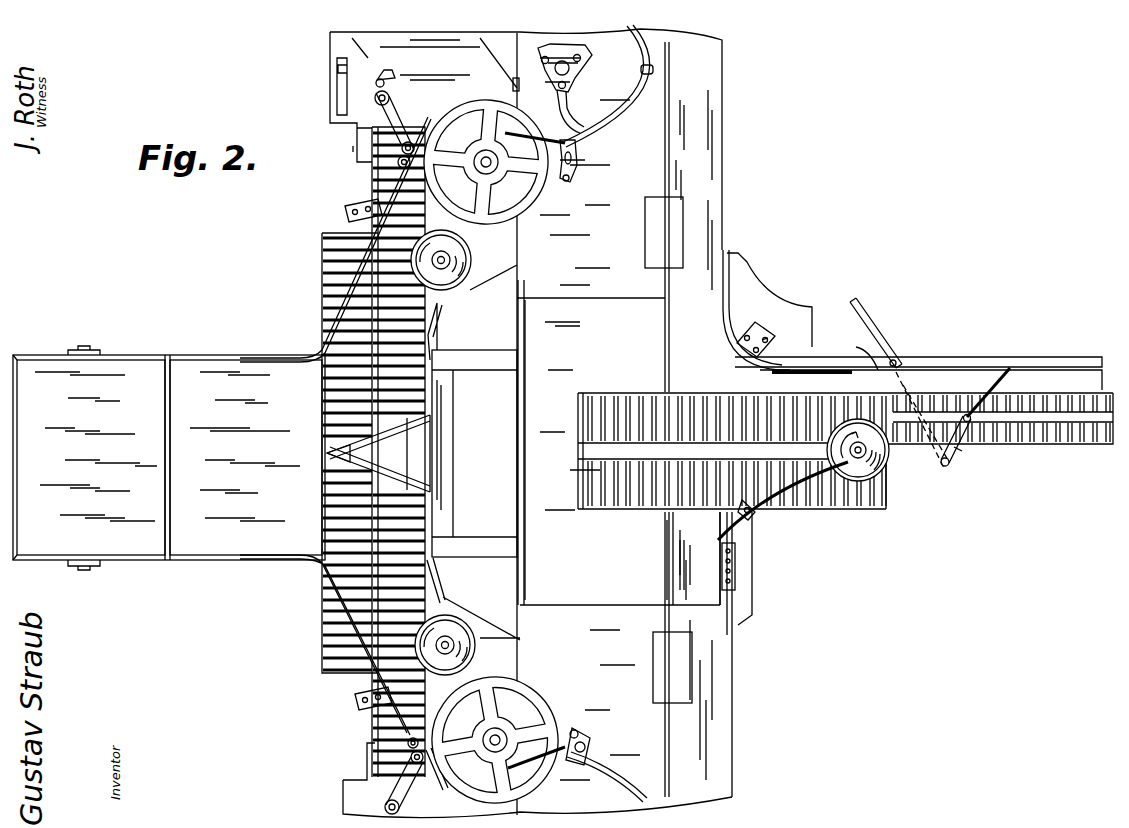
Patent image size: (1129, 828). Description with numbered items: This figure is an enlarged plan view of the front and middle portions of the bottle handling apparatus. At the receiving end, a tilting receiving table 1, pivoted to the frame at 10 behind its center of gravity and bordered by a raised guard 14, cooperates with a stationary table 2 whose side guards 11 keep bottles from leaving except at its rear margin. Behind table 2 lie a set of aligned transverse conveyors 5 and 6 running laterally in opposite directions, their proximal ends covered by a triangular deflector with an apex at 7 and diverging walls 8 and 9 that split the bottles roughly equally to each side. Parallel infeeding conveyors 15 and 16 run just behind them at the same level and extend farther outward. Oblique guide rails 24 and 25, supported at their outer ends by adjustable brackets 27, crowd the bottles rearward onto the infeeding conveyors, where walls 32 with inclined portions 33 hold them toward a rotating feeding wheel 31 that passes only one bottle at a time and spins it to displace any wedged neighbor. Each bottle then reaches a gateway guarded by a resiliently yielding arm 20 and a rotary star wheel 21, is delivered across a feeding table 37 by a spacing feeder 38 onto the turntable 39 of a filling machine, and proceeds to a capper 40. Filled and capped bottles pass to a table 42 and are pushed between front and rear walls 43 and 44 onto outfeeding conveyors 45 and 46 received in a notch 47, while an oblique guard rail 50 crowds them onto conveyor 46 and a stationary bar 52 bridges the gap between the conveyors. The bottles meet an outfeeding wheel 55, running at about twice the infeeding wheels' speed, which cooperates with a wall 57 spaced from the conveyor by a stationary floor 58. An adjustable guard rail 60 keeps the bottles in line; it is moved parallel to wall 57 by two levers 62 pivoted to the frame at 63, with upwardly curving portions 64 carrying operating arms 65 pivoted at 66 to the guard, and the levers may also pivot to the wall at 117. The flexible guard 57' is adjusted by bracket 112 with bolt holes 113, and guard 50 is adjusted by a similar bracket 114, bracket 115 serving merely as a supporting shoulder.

The tilting receiving table 1 is at (70, 486).
The stationary table 2 is at (225, 490).
The conveyor 5 is at (340, 612).
The conveyor 6 is at (340, 290).
The apex of the triangular deflector 7 is at (330, 456).
The deflector wall 8 is at (372, 470).
The deflector wall 9 is at (360, 440).
The pivot 10 is at (84, 352).
The side guard 11 is at (228, 560).
The raised guard 14 is at (55, 358).
The infeeding conveyor 15 is at (400, 622).
The infeeding conveyor 16 is at (372, 258).
The resiliently yielding arm 20 is at (392, 130).
The rotary star wheel 21 is at (530, 206).
The guide rail 24 is at (330, 588).
The guide rail 25 is at (335, 335).
The bracket 27 is at (352, 222).
The feeding wheel 31 is at (485, 660).
The wall 32 is at (432, 522).
The obliquely inclined portion 33 is at (440, 306).
The feeding table 37 is at (612, 126).
The spacing feeder 38 is at (570, 92).
The turntable 39 is at (620, 40).
The capper 40 is at (650, 240).
The table 42 is at (620, 588).
The front wall 43 is at (524, 505).
The rear wall 44 is at (665, 543).
The outfeeding conveyor 45 is at (630, 500).
The outfeeding conveyor 46 is at (640, 382).
The notch 47 is at (600, 514).
The guard rail 50 is at (798, 515).
The stationary bar 52 is at (696, 558).
The outfeeding wheel 55 is at (878, 472).
The guard rail or wall 57 is at (914, 312).
The flexible guard 57' is at (740, 310).
The stationary bar or floor 58 is at (931, 379).
The adjustable guard rail 60 is at (1035, 440).
The lever 62 is at (887, 350).
The pivot 63 is at (922, 422).
The upwardly curving portion 64 is at (950, 470).
The operating arm 65 is at (960, 450).
The pivot 66 is at (1007, 392).
The bracket 112 is at (762, 337).
The bolt holes 113 is at (758, 357).
The bracket 114 is at (736, 582).
The bracket 115 is at (752, 516).
The pivot 117 is at (866, 352).